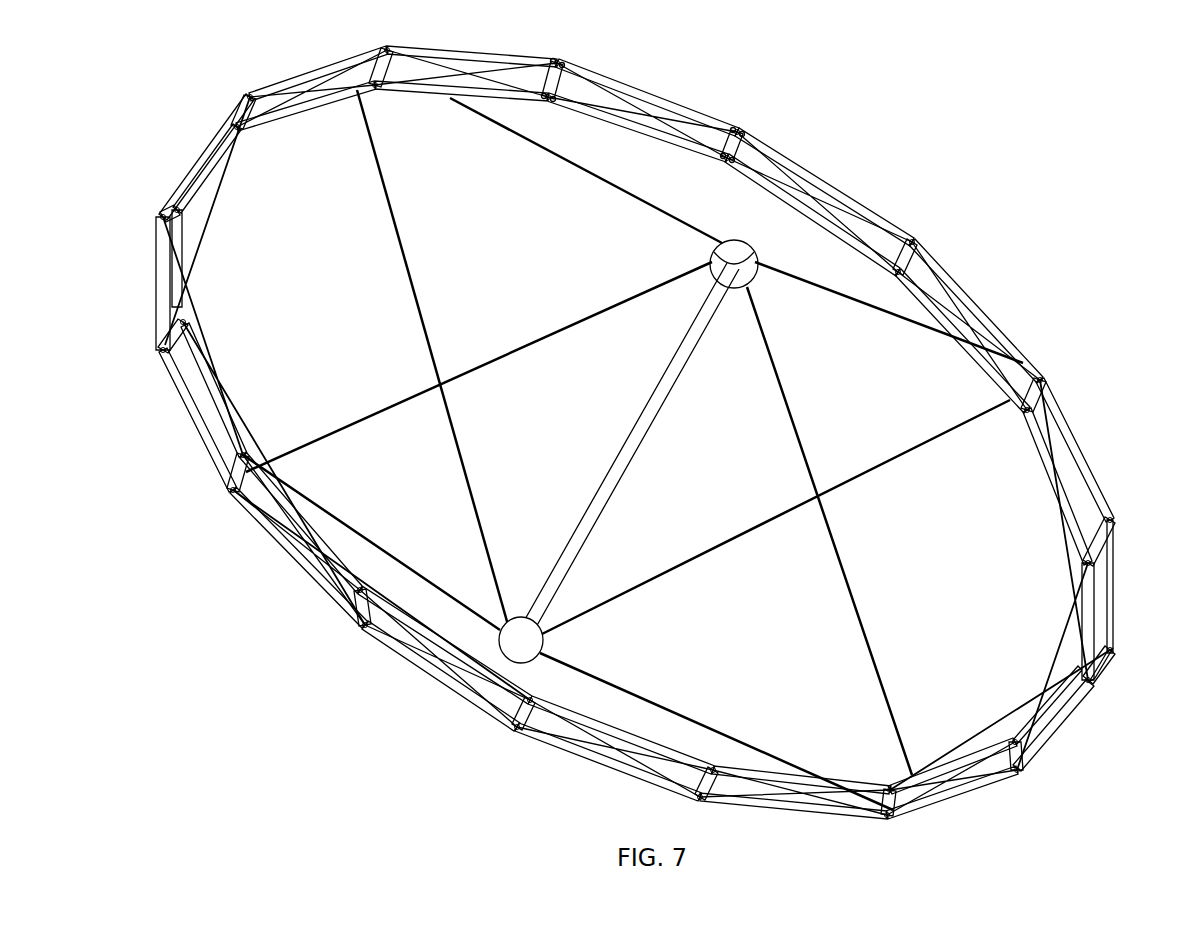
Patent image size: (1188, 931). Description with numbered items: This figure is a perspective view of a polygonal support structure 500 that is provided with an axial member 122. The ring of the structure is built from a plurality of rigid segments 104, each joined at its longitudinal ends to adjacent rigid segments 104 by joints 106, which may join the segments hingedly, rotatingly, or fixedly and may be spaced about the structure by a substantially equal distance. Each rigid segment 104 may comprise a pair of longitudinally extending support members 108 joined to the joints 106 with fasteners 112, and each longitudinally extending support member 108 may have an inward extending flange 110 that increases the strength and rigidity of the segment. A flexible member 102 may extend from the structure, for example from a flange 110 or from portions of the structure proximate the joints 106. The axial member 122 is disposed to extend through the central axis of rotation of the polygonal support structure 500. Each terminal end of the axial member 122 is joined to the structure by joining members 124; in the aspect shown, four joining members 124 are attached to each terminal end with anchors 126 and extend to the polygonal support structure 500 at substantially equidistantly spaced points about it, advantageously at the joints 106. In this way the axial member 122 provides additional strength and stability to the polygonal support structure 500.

The polygonal support structure 500 is at (1078, 298).
The flexible member 102 is at (384, 100).
The rigid segment 104 is at (677, 107).
The joint 106 is at (740, 150).
The longitudinal support member 108 is at (813, 210).
The flange 110 is at (917, 307).
The fastener 112 is at (562, 62).
The axial member 122 is at (633, 440).
The joining member 124 is at (430, 313).
The anchor 126 is at (717, 251).